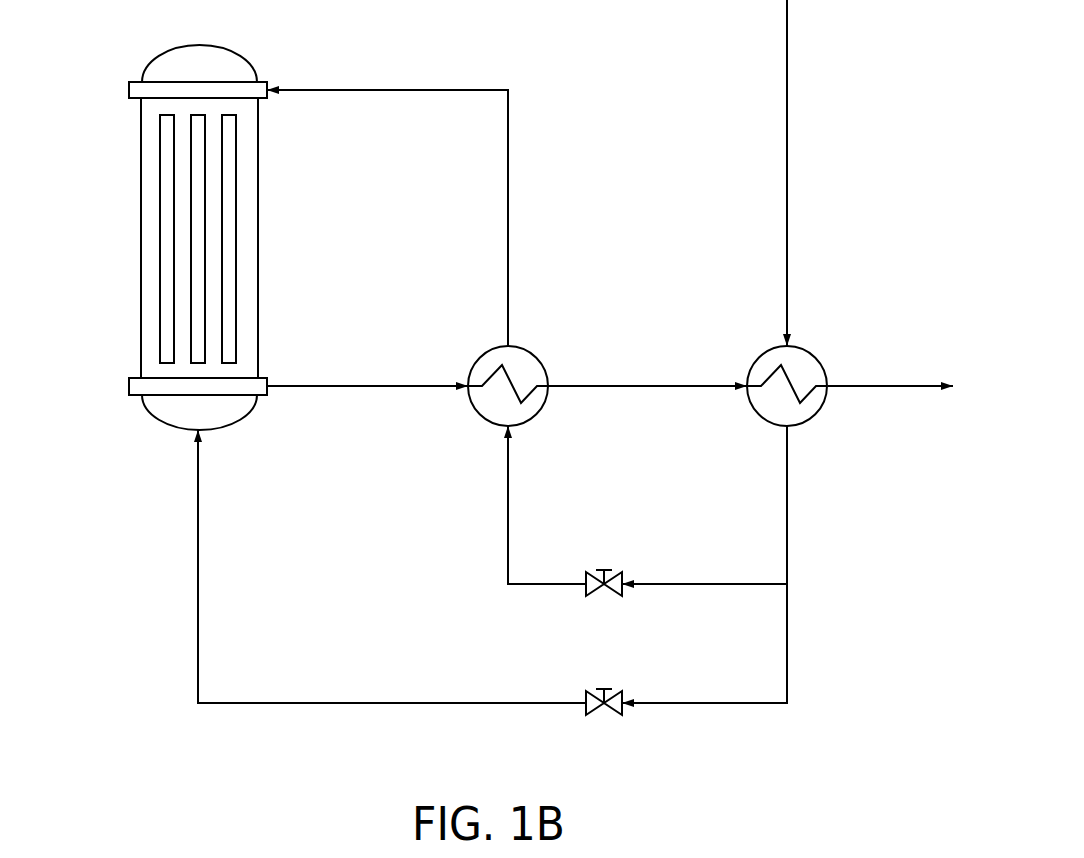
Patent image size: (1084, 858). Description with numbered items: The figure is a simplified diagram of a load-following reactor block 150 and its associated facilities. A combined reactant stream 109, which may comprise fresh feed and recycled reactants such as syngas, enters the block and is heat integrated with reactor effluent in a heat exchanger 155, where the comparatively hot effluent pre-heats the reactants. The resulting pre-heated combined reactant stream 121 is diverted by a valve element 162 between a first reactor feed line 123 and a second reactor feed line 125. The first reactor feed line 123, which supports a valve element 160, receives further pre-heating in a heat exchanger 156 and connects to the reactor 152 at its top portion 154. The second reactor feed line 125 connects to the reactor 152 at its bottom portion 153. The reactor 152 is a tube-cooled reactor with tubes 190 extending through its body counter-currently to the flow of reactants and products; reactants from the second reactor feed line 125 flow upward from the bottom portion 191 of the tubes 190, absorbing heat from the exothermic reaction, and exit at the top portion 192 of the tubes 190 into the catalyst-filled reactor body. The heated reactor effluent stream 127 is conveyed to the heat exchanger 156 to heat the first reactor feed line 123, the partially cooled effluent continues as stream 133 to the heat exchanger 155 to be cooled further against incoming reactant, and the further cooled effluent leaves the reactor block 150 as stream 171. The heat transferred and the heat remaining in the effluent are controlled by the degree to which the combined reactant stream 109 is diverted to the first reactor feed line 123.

The combined reactant stream 109 is at (787, 150).
The pre-heated combined reactant stream 121 is at (788, 505).
The first reactor feed line 123 is at (508, 160).
The second reactor feed line 125 is at (198, 622).
The reactor effluent stream 127 is at (336, 387).
The partially cooled reactor effluent stream 133 is at (603, 387).
The reactor block 150 is at (156, 301).
The reactor 152 is at (141, 231).
The bottom portion 153 is at (152, 424).
The top portion 154 is at (129, 92).
The heat exchanger 155 is at (759, 355).
The heat exchanger 156 is at (476, 360).
The valve element 160 is at (625, 579).
The valve element 162 is at (625, 698).
The further cooled reactor effluent stream 171 is at (893, 386).
The tubes 190 is at (146, 264).
The bottom portion of the tubes 191 is at (160, 357).
The top portion of the tubes 192 is at (160, 117).